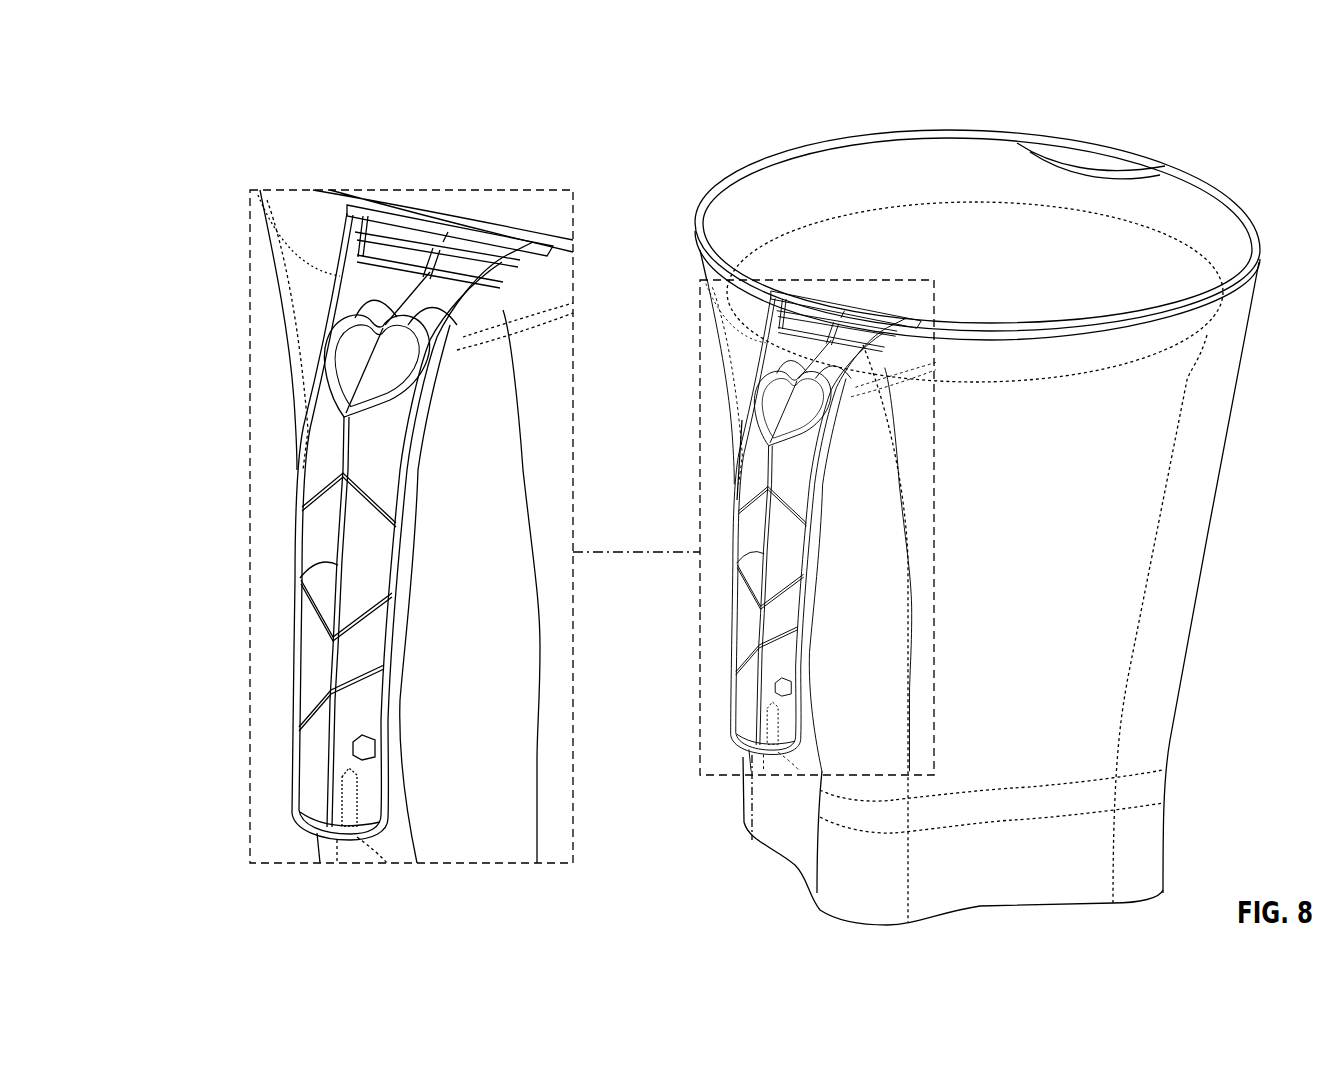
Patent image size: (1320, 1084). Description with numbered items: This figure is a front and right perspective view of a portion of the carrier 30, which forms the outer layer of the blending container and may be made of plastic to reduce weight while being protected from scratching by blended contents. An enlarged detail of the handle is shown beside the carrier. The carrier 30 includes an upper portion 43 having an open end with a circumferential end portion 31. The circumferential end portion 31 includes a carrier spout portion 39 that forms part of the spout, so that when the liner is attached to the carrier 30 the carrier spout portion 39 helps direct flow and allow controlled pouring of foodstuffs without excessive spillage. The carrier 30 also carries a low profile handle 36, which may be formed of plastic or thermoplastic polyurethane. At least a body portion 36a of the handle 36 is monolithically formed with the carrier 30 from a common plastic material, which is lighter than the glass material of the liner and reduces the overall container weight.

The carrier 30 is at (1207, 513).
The circumferential end portion 31 is at (1228, 202).
The handle 36 is at (290, 600).
The body portion 36a is at (748, 452).
The carrier spout portion 39 is at (1108, 158).
The upper portion 43 is at (1247, 272).